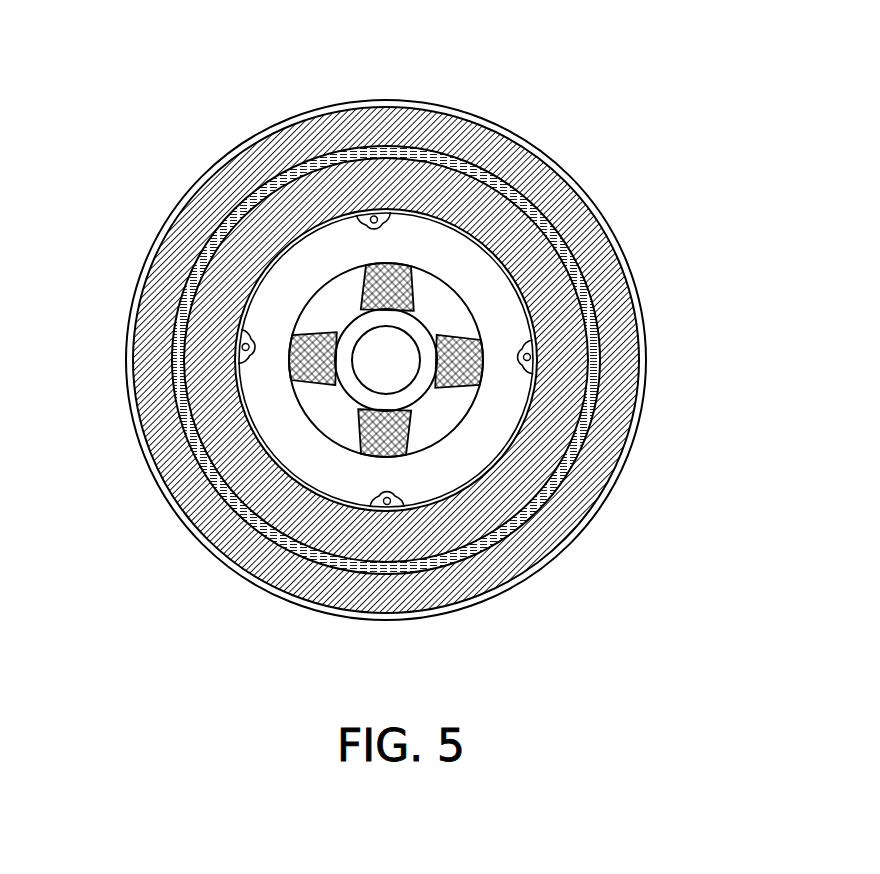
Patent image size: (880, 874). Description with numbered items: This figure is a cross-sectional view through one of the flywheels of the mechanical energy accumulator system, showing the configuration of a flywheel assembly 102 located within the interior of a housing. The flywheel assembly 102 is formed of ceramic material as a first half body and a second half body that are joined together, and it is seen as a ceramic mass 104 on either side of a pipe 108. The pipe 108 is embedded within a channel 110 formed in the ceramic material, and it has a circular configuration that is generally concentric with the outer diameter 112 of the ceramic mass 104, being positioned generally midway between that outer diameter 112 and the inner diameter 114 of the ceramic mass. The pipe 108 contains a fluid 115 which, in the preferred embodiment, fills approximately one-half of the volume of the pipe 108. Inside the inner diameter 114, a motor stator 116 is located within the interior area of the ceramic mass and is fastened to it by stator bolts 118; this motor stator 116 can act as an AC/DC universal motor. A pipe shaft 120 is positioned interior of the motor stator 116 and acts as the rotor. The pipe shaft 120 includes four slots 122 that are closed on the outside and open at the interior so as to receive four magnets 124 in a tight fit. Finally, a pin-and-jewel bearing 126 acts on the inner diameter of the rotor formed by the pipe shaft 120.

The flywheel assembly 102 is at (516, 103).
The ceramic mass 104 is at (577, 212).
The pipe 108 is at (582, 279).
The channel 110 is at (448, 152).
The outer diameter 112 is at (410, 108).
The inner diameter 114 is at (437, 217).
The fluid 115 is at (178, 372).
The motor stator 116 is at (570, 362).
The stator bolts 118 is at (383, 508).
The pipe shaft 120 is at (455, 408).
The slots 122 is at (315, 330).
The magnets 124 is at (308, 352).
The pin-and-jewel bearing 126 is at (392, 378).